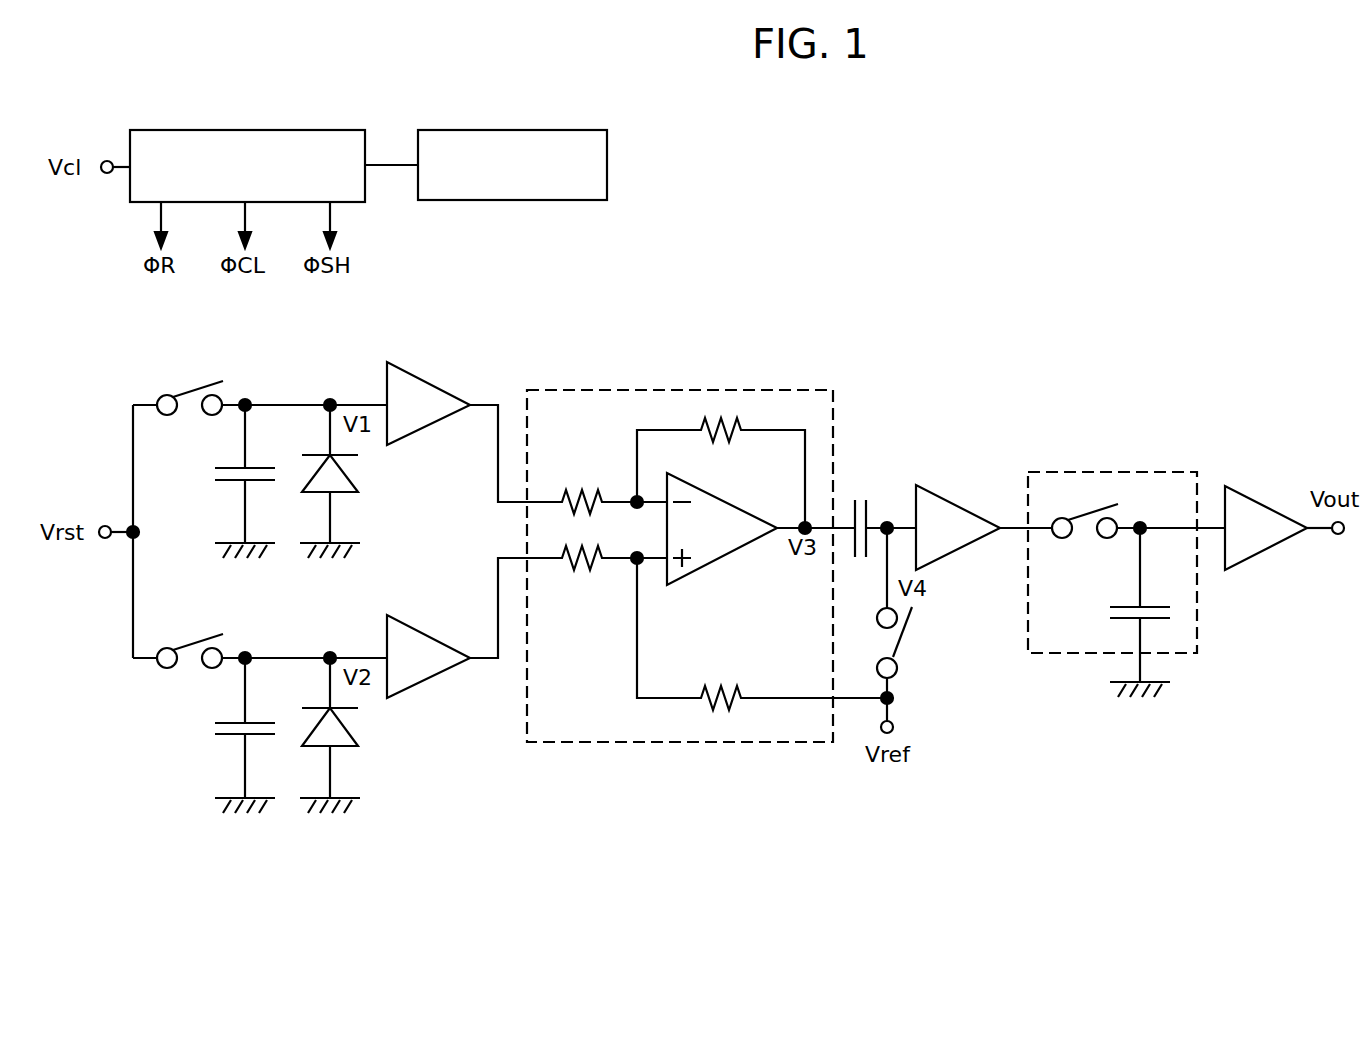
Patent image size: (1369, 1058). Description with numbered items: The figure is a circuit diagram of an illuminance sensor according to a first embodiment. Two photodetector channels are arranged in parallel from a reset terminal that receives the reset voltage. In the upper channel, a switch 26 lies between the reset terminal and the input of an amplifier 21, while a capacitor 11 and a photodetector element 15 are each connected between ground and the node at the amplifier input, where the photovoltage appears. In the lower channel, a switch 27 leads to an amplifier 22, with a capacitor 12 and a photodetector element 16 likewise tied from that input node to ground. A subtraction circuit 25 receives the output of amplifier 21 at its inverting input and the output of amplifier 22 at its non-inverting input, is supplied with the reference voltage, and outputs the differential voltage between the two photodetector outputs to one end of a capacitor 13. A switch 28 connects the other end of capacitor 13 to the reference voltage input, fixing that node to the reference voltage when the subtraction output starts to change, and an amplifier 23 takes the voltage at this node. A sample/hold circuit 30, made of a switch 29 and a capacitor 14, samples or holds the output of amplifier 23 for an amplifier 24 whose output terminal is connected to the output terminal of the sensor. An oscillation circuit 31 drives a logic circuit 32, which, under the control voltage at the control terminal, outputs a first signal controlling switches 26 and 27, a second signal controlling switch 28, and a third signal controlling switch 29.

The capacitor 11 is at (213, 478).
The capacitor 12 is at (213, 731).
The capacitor 13 is at (862, 496).
The capacitor 14 is at (1108, 616).
The photodetector element 15 is at (352, 467).
The photodetector element 16 is at (352, 720).
The amplifier 21 is at (442, 388).
The amplifier 22 is at (442, 641).
The amplifier 23 is at (973, 504).
The amplifier 24 is at (1283, 504).
The subtraction circuit 25 is at (791, 390).
The switch 26 is at (189, 408).
The switch 27 is at (189, 661).
The switch 28 is at (905, 660).
The switch 29 is at (1082, 538).
The sample/hold circuit 30 is at (1112, 550).
The oscillation circuit 31 is at (464, 128).
The logic circuit 32 is at (245, 128).